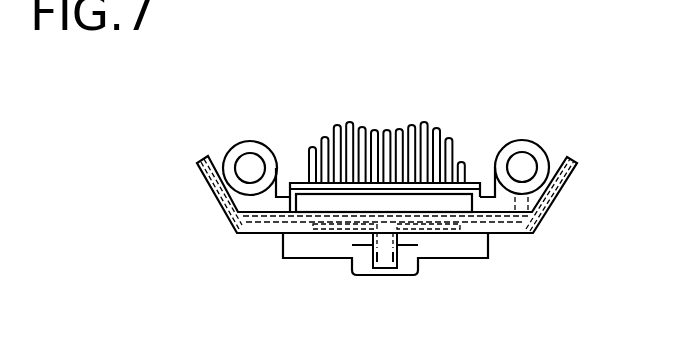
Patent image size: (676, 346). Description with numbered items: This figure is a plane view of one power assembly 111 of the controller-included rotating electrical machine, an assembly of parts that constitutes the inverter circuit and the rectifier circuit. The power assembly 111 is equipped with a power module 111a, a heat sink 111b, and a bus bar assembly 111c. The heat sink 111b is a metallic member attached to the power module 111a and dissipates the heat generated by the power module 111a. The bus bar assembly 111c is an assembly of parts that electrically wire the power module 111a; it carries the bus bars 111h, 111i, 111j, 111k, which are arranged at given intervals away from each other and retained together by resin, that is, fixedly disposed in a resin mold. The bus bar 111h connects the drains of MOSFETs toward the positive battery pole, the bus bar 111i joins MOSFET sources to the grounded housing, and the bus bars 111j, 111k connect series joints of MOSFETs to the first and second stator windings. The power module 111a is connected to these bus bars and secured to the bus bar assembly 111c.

The power assembly 111 is at (547, 57).
The power module 111a is at (312, 202).
The heat sink 111b is at (316, 188).
The bus bar assembly 111c is at (270, 225).
The bus bar 111h is at (505, 221).
The bus bar 111i is at (553, 183).
The bus bar 111j is at (437, 228).
The bus bar 111k is at (337, 238).